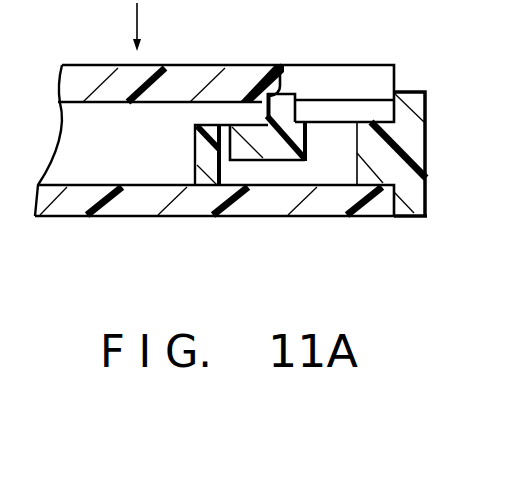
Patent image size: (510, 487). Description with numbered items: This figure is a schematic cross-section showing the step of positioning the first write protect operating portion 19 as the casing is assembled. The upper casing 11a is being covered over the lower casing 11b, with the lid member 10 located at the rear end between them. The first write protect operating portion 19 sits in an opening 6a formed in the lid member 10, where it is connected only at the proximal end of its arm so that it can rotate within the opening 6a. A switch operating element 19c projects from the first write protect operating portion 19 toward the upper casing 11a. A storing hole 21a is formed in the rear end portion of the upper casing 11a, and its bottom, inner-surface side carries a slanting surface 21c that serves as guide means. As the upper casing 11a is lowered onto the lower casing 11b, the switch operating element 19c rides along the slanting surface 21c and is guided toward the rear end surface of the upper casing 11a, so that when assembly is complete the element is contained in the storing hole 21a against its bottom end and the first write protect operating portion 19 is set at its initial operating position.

The upper casing 11a is at (181, 75).
The lower casing 11b is at (127, 208).
The storing hole 21a is at (384, 70).
The slanting surface 21c is at (283, 90).
The switch operating element 19c is at (297, 104).
The first write protect operating portion 19 is at (277, 147).
The opening 6a is at (357, 152).
The lid member 10 is at (424, 148).